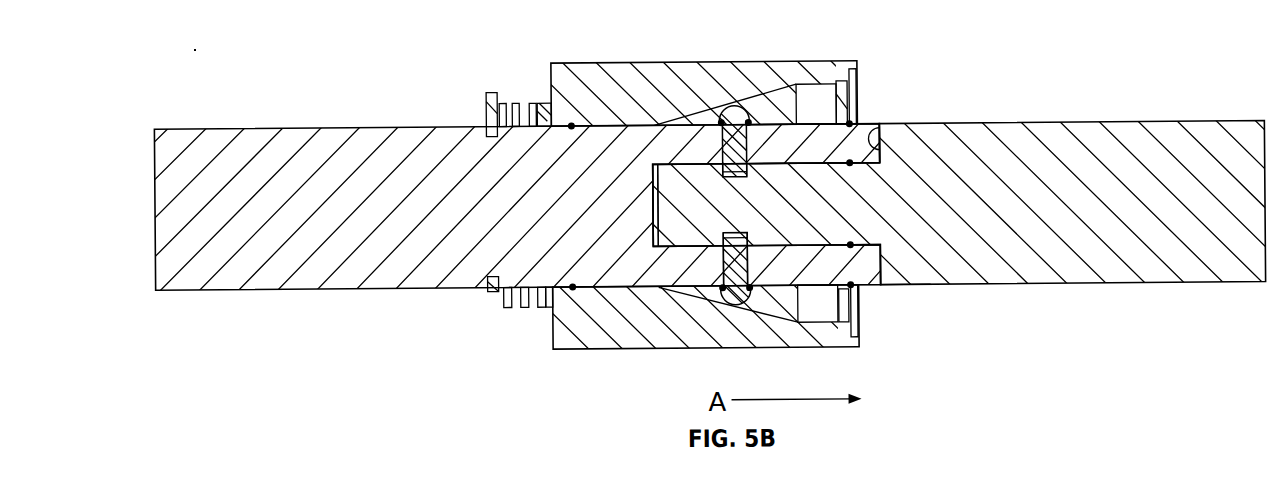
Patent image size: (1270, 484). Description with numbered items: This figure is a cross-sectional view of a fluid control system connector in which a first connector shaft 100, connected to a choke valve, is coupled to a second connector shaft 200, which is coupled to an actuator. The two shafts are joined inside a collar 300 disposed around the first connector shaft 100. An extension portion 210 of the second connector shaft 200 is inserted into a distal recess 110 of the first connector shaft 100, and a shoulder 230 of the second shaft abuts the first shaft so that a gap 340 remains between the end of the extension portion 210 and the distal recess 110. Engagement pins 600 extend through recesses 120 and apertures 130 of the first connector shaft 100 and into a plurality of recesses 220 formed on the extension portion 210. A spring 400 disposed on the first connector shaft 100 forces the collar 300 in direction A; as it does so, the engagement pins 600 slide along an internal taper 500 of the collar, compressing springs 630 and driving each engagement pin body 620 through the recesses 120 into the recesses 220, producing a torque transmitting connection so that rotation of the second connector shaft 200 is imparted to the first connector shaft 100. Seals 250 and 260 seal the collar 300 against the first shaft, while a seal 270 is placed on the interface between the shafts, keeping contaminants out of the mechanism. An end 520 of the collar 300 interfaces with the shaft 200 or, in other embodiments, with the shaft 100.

The first connector shaft 100 is at (272, 124).
The second connector shaft 200 is at (1053, 125).
The collar 300 is at (614, 62).
The seal 250 is at (572, 124).
The recesses 120 is at (731, 125).
The extension portion 210 is at (738, 120).
The recesses 220 is at (748, 250).
The spring 400 is at (490, 90).
The internal taper 500 is at (683, 117).
The engagement pins 600 is at (768, 160).
The springs 630 is at (838, 82).
The end of collar 520 is at (862, 320).
The seal 260 is at (851, 122).
The seal 270 is at (853, 160).
The apertures 130 is at (884, 155).
The shoulder 230 is at (882, 150).
The distal recess 110 is at (893, 283).
The gap 340 is at (655, 240).
The engagement pin body 620 is at (723, 264).